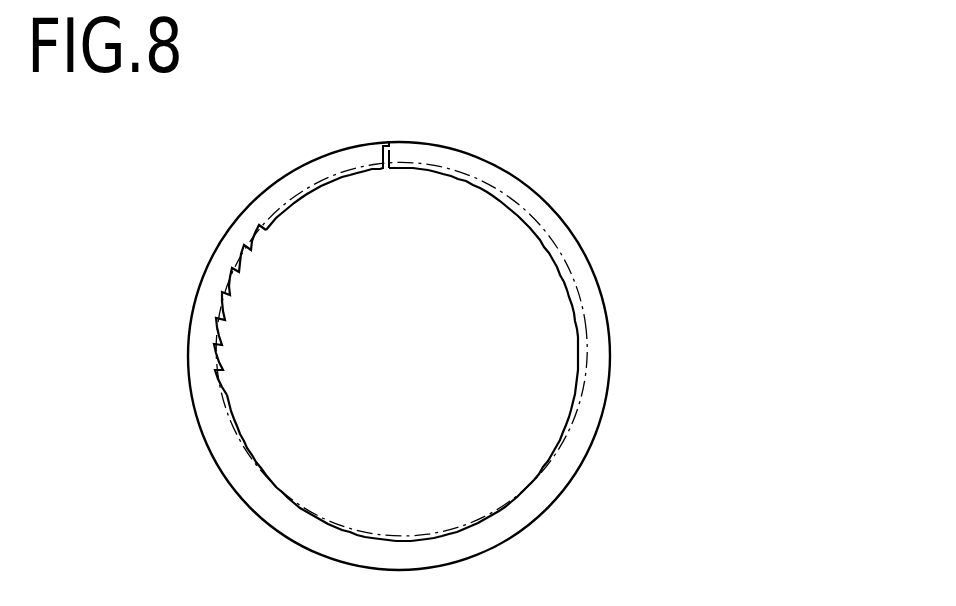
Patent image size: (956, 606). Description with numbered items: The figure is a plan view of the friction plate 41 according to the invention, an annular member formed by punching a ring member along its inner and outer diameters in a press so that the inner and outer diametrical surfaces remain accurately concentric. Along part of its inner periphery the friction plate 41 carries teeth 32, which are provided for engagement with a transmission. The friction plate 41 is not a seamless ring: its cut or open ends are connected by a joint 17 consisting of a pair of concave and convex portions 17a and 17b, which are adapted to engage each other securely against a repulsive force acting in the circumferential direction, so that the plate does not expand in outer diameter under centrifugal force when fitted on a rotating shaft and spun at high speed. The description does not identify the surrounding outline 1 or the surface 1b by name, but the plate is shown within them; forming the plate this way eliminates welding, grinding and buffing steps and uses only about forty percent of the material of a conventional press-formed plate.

The cylinder 1 is at (575, 522).
The inner peripheral surface of cylinder 1b is at (596, 322).
The friction plate 41 is at (568, 215).
The teeth 32 is at (245, 318).
The joint 17 is at (388, 190).
The concave portion 17a is at (383, 160).
The convex portion 17b is at (390, 152).